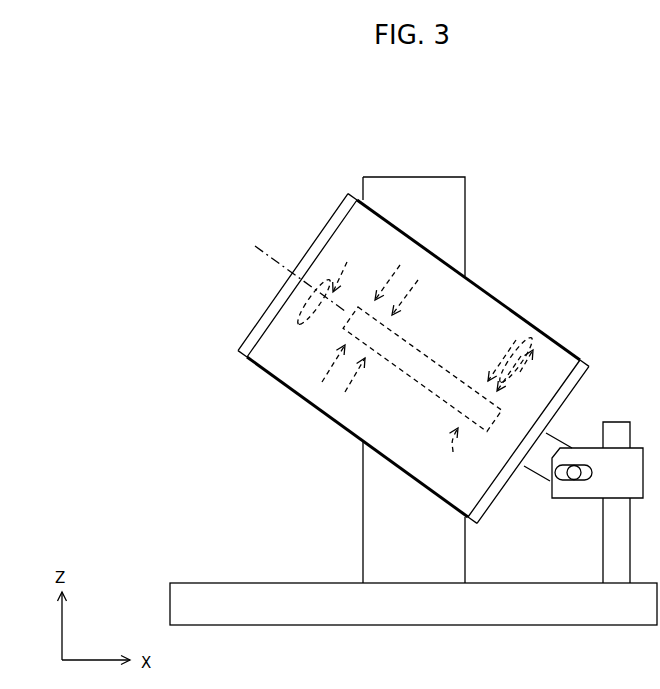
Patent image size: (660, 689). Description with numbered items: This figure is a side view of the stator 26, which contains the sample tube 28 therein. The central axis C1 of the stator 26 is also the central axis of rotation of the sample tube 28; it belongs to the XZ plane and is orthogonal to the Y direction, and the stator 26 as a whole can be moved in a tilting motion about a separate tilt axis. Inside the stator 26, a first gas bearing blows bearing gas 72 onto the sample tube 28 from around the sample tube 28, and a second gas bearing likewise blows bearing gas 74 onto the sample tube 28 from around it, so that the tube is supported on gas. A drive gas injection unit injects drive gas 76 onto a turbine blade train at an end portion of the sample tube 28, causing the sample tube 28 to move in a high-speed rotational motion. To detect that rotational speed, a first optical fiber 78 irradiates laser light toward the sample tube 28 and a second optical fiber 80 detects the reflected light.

The stator 26 is at (296, 153).
The central axis C1 is at (286, 272).
The sample tube 28 is at (433, 362).
The bearing gas 72 is at (353, 386).
The bearing gas 74 is at (453, 452).
The drive gas 76 is at (333, 363).
The first optical fiber 78 is at (521, 345).
The second optical fiber 80 is at (522, 373).